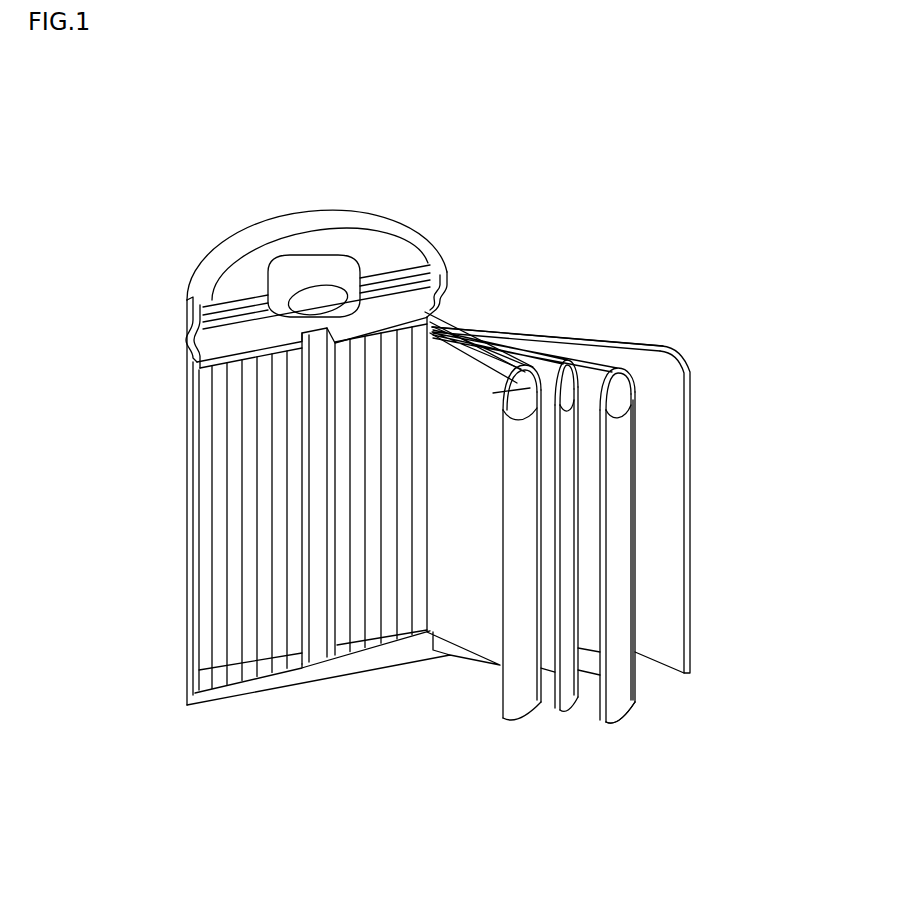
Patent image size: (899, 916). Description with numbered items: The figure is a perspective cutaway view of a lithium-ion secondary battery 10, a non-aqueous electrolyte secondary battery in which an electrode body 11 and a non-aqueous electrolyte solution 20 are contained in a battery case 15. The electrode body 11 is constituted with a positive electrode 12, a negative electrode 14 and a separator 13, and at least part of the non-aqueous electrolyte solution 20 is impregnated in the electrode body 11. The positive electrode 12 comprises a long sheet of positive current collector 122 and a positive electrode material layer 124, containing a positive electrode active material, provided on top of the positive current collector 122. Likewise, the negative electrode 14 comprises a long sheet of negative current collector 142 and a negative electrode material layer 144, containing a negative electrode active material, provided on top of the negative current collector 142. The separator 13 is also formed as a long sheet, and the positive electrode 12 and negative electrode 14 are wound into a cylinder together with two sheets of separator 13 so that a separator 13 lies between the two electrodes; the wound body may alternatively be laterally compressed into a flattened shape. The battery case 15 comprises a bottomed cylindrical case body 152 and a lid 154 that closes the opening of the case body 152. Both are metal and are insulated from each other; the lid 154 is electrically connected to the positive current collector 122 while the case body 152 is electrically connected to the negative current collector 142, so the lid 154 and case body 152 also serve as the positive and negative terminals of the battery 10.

The lithium-ion secondary battery 10 is at (463, 136).
The electrode body 11 is at (203, 610).
The positive electrode 12 is at (507, 727).
The separator 13 is at (565, 718).
The negative electrode 14 is at (613, 728).
The battery case 15 is at (185, 443).
The non-aqueous electrolyte solution 20 is at (232, 545).
The positive current collector 122 is at (498, 333).
The positive electrode material layer 124 is at (513, 390).
The negative current collector 142 is at (640, 705).
The negative electrode material layer 144 is at (623, 660).
The case body 152 is at (313, 680).
The lid 154 is at (318, 258).